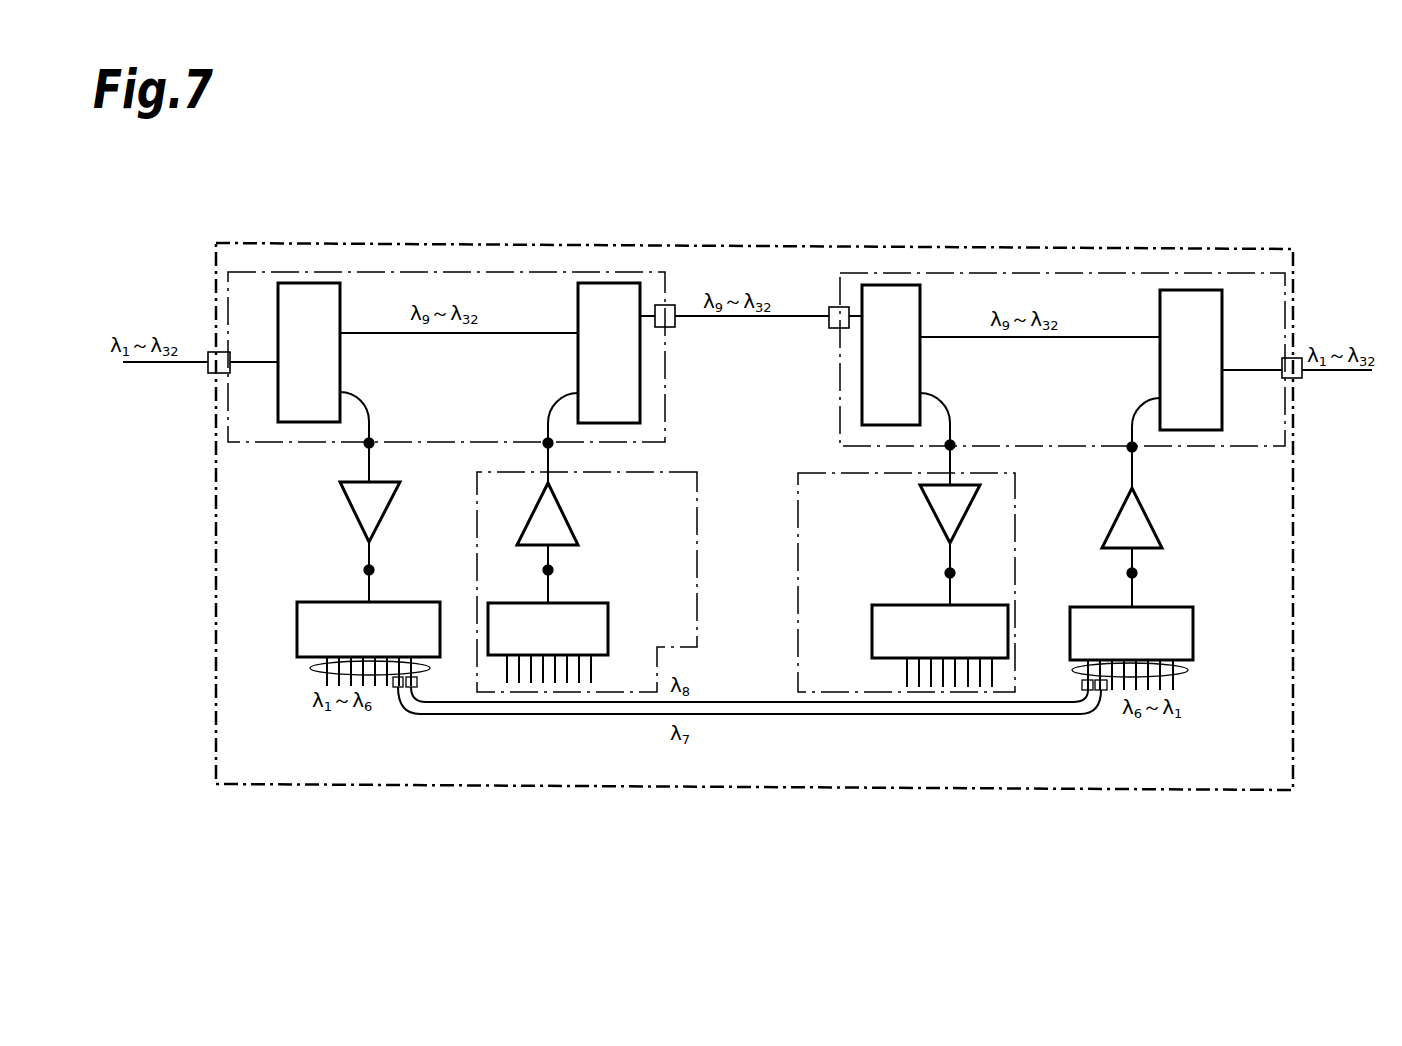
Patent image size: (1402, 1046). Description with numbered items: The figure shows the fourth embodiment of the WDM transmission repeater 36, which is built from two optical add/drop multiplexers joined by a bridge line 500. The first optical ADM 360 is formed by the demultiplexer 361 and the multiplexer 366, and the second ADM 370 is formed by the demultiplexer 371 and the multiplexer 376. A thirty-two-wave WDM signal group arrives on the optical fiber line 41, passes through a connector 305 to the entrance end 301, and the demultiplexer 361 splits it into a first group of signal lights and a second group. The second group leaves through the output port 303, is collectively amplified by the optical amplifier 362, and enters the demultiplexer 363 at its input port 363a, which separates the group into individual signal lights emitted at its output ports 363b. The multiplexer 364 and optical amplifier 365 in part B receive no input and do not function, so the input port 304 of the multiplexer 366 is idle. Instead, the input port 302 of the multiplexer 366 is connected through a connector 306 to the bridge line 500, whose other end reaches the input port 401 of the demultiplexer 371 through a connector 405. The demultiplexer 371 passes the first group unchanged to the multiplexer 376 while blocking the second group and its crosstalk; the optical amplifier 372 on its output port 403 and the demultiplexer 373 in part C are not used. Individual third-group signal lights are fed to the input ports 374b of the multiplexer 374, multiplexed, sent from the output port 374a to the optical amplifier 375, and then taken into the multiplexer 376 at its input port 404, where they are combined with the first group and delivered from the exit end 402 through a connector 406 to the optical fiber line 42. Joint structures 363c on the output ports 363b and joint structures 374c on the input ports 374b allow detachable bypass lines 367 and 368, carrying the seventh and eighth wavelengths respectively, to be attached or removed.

The WDM transmission repeater 36 is at (752, 245).
The optical fiber line 41 is at (150, 363).
The optical fiber line 42 is at (1355, 371).
The entrance end 301 is at (263, 362).
The input port 302 is at (648, 313).
The output port 303 is at (367, 429).
The input port 304 is at (550, 428).
The connector 305 is at (216, 352).
The connector 306 is at (669, 305).
The first optical ADM 360 is at (428, 272).
The demultiplexer 361 is at (316, 283).
The optical amplifier 362 is at (350, 508).
The demultiplexer 363 is at (297, 628).
The input port 363a is at (367, 586).
The output ports 363b is at (312, 668).
The joint structures 363c is at (398, 688).
The multiplexer 364 is at (608, 628).
The optical amplifier 365 is at (567, 515).
The multiplexer 366 is at (617, 283).
The bypass line 367 is at (752, 716).
The bypass line 368 is at (757, 700).
The second ADM 370 is at (1013, 273).
The demultiplexer 371 is at (891, 285).
The optical amplifier 372 is at (928, 512).
The demultiplexer 373 is at (873, 630).
The multiplexer 374 is at (1193, 633).
The output port 374a is at (1132, 585).
The input ports 374b is at (1188, 670).
The joint structures 374c is at (1104, 690).
The optical amplifier 375 is at (1150, 520).
The multiplexer 376 is at (1197, 290).
The input port 401 is at (855, 315).
The exit end 402 is at (1252, 370).
The output port 403 is at (947, 432).
The input port 404 is at (1140, 432).
The connector 405 is at (838, 307).
The connector 406 is at (1295, 358).
The bridge line 500 is at (750, 318).
The part B is at (698, 575).
The part C is at (797, 505).